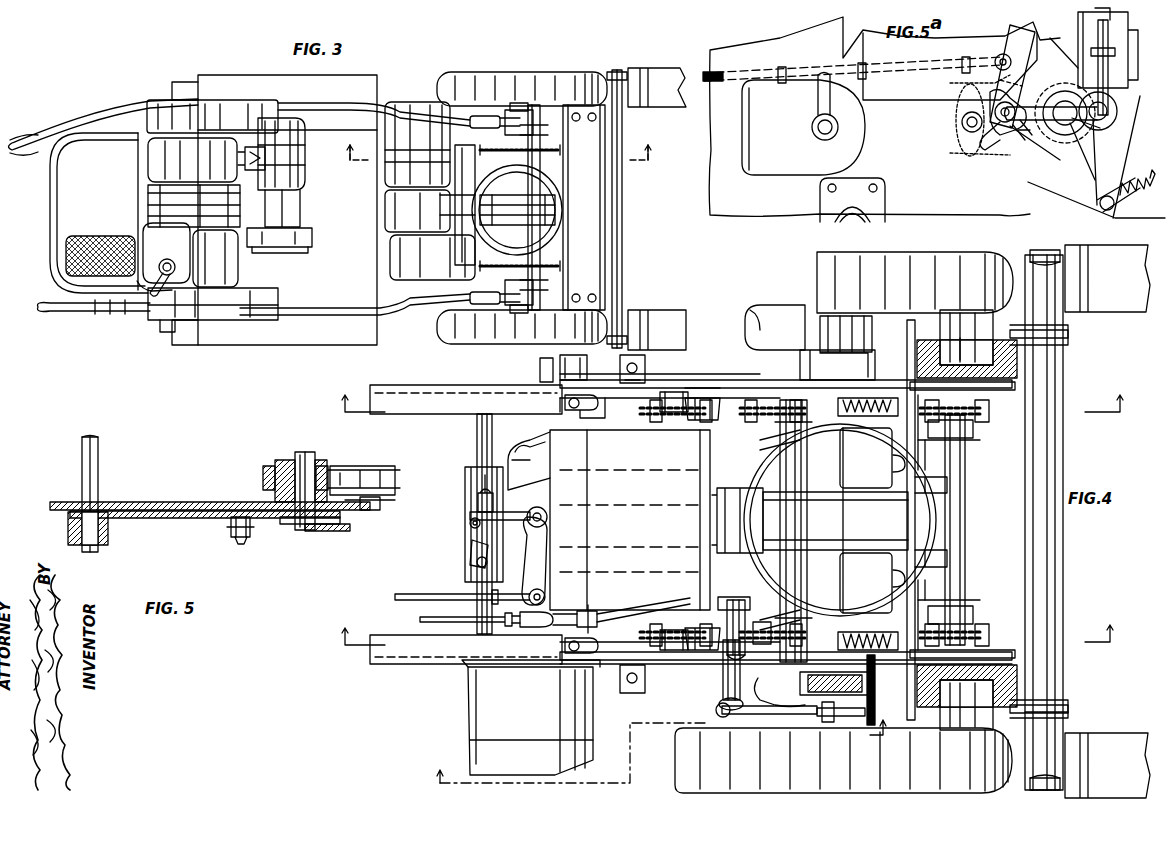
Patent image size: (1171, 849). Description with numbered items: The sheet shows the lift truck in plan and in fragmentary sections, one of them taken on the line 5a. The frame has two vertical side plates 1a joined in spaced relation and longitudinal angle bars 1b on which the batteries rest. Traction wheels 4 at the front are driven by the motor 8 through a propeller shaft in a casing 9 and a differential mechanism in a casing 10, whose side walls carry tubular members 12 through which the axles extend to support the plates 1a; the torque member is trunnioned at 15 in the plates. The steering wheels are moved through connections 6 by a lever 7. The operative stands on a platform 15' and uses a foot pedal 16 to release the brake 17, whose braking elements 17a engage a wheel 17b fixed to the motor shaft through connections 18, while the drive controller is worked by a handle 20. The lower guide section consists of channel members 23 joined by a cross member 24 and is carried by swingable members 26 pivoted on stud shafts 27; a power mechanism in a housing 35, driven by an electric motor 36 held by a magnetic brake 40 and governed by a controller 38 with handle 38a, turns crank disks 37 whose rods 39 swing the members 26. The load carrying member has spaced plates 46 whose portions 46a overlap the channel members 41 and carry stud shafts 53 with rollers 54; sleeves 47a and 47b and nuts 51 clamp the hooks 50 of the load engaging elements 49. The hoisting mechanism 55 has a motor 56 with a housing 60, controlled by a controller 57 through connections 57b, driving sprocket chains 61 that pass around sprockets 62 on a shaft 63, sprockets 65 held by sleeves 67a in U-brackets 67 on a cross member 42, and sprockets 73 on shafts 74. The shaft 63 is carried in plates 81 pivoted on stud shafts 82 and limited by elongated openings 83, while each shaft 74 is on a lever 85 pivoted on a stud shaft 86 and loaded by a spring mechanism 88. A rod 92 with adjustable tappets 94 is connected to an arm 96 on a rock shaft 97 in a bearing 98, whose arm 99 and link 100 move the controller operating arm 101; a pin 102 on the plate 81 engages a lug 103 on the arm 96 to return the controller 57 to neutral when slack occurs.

In FIG. 4, the vertical side plates 1a is at (638, 393).
In FIG. 5, the vertical side plates 1a is at (190, 492).
In FIG. 4, the longitudinal angle bars 1b is at (425, 388).
In FIG. 3, the traction wheels 4 is at (588, 68).
In FIG. 4, the traction wheels 4 is at (970, 258).
In FIG. 4, the section line 5a— 5a is at (651, 758).
In FIG. 3, the steering connections 6 is at (498, 144).
In FIG. 4, the steering connections 6 is at (732, 395).
In FIG. 3, the steering lever 7 is at (48, 108).
In FIG. 4, the steering lever 7 is at (727, 625).
In FIG. 4, the motor 8 is at (609, 520).
In FIG. 3, the propeller shaft casing 9 is at (520, 208).
In FIG. 4, the propeller shaft casing 9 is at (810, 520).
In FIG. 3, the differential casing 10 is at (562, 172).
In FIG. 4, the differential casing 10 is at (840, 520).
In FIG. 4, the tubular members 12 is at (875, 340).
In FIG. 4, the trunnions 15 is at (556, 367).
In FIG. 3, the operative's platform 15' is at (99, 213).
In FIG. 3, the foot pedal 16 is at (118, 240).
In FIG. 4, the brake 17 is at (464, 524).
In FIG. 4, the braking elements 17a is at (468, 470).
In FIG. 4, the brake wheel 17b is at (470, 528).
In FIG. 4, the brake connections 18 is at (428, 598).
In FIG. 3, the controller handle 20 is at (45, 313).
In FIG. 4, the channel members 23 is at (1020, 385).
In FIG. 3, the cross member 24 is at (508, 183).
In FIG. 5A, the swingable members 26 is at (1089, 50).
In FIG. 4, the swingable members 26 is at (800, 362).
In FIG. 4, the stud shafts 27 is at (800, 312).
In FIG. 3, the power mechanism housing 35 is at (212, 193).
In FIG. 3, the electric motor 36 is at (305, 132).
In FIG. 3, the crank disks 37 is at (158, 323).
In FIG. 3, the controller 38 is at (166, 259).
In FIG. 3, the operating handle 38a is at (140, 286).
In FIG. 3, the rods 39 is at (312, 105).
In FIG. 3, the magnetic brake 40 is at (312, 247).
In FIG. 4, the channel members 41 is at (1030, 348).
In FIG. 4, the cross member 42 is at (915, 530).
In FIG. 4, the spaced plates 46 is at (1070, 335).
In FIG. 4, the inwardly extending portions 46a is at (985, 318).
In FIG. 4, the sleeve 47a is at (1063, 580).
In FIG. 4, the sleeve 47b is at (1068, 712).
In FIG. 3, the load engaging elements 49 is at (650, 70).
In FIG. 4, the load engaging elements 49 is at (1110, 312).
In FIG. 4, the hook 50 is at (1055, 300).
In FIG. 4, the nuts 51 is at (1055, 250).
In FIG. 4, the stud shafts 53 is at (960, 320).
In FIG. 4, the rollers 54 is at (925, 335).
In FIG. 3, the hoisting mechanism 55 is at (470, 182).
In FIG. 3, the hoist motor 56 is at (385, 120).
In FIG. 5A, the controller 57 is at (803, 127).
In FIG. 4, the controller 57 is at (531, 717).
In FIG. 5A, the connections 57b is at (714, 68).
In FIG. 4, the connections 57b is at (450, 624).
In FIG. 3, the housing 60 is at (385, 210).
In FIG. 4, the housing 60 is at (960, 490).
In FIG. 4, the sprocket chains 61 is at (655, 412).
In FIG. 4, the sprockets 62 is at (807, 448).
In FIG. 5A, the shaft 63 is at (1082, 135).
In FIG. 4, the shaft 63 is at (805, 478).
In FIG. 4, the sprockets 65 is at (975, 428).
In FIG. 4, the U-brackets 67 is at (970, 458).
In FIG. 4, the sleeve 67a is at (975, 445).
In FIG. 4, the sprockets 73 is at (672, 420).
In FIG. 5, the sprockets 73 is at (263, 477).
In FIG. 5, the shafts 74 is at (296, 525).
In FIG. 5A, the plates 81 is at (1075, 200).
In FIG. 4, the plates 81 is at (812, 524).
In FIG. 4, the stud shaft 82 is at (698, 420).
In FIG. 5A, the elongated openings 83 is at (1124, 166).
In FIG. 5, the lever 85 is at (190, 518).
In FIG. 5, the stud shaft 86 is at (98, 470).
In FIG. 5, the spring mechanism 88 is at (232, 534).
In FIG. 5A, the rod 92 is at (1110, 42).
In FIG. 4, the rod 92 is at (843, 717).
In FIG. 5A, the adjustable tappets 94 is at (1115, 52).
In FIG. 5A, the arm 96 is at (1066, 90).
In FIG. 4, the arm 96 is at (775, 715).
In FIG. 5A, the rock shaft 97 is at (1000, 140).
In FIG. 5A, the bearing 98 is at (985, 140).
In FIG. 4, the bearing 98 is at (723, 690).
In FIG. 5A, the arm 99 is at (997, 60).
In FIG. 4, the arm 99 is at (730, 598).
In FIG. 5A, the link 100 is at (918, 78).
In FIG. 4, the link 100 is at (635, 612).
In FIG. 5A, the operating arm 101 is at (812, 94).
In FIG. 4, the operating arm 101 is at (572, 605).
In FIG. 5A, the pin 102 is at (1030, 76).
In FIG. 4, the pin 102 is at (820, 681).
In FIG. 5A, the lug 103 is at (1017, 146).
In FIG. 4, the lug 103 is at (779, 692).